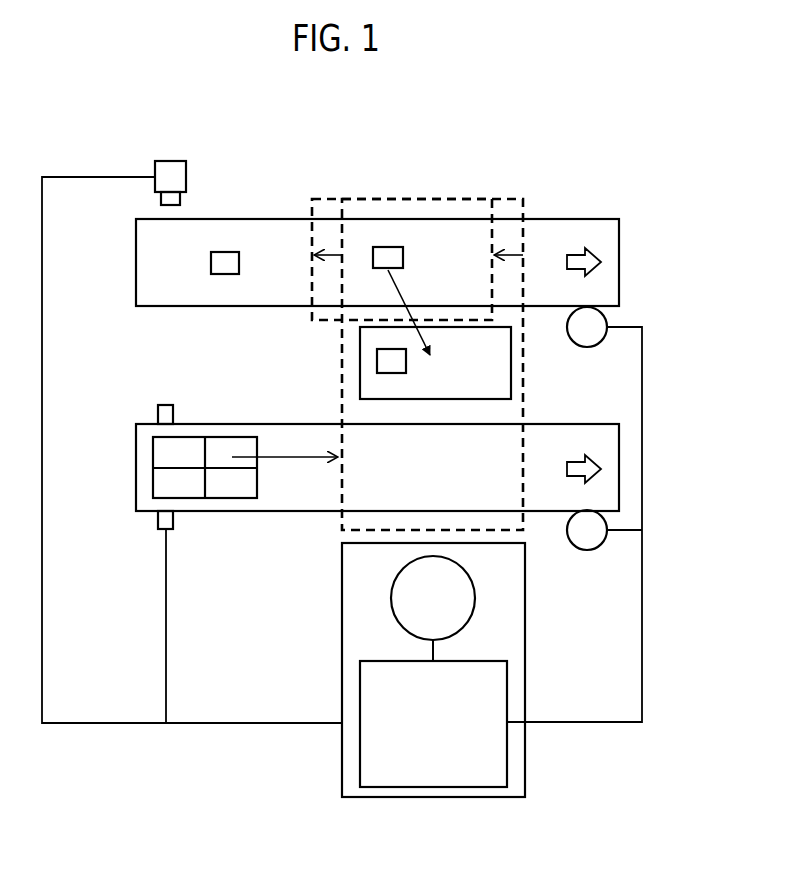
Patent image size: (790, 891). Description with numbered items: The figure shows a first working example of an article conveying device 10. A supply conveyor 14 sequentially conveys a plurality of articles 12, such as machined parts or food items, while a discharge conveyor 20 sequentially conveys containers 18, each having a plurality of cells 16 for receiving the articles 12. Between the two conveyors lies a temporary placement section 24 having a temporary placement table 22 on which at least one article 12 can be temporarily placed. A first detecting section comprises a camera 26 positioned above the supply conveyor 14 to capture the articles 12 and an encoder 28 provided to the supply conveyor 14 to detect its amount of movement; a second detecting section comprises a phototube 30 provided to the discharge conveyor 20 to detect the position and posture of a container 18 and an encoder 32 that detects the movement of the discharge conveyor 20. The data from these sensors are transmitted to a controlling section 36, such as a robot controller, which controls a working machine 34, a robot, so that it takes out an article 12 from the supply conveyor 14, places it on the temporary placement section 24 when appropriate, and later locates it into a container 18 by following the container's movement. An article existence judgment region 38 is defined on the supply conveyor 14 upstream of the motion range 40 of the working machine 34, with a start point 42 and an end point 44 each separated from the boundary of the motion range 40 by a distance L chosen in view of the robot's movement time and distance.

The article conveying device 10 is at (600, 184).
The article 12 is at (228, 252).
The supply conveyor 14 is at (619, 263).
The cell 16 is at (213, 453).
The container 18 is at (230, 498).
The discharge conveyor 20 is at (540, 424).
The temporary placement table 22 is at (512, 365).
The temporary placement section 24 is at (356, 394).
The camera 26 is at (155, 161).
The encoder 28 is at (607, 320).
The phototube 30 is at (172, 529).
The encoder 32 is at (583, 550).
The working machine 34 is at (463, 633).
The controlling section 36 is at (507, 760).
The article existence judgment region 38 is at (325, 322).
The motion range 40 is at (333, 530).
The start point 42 is at (312, 189).
The end point 44 is at (492, 187).